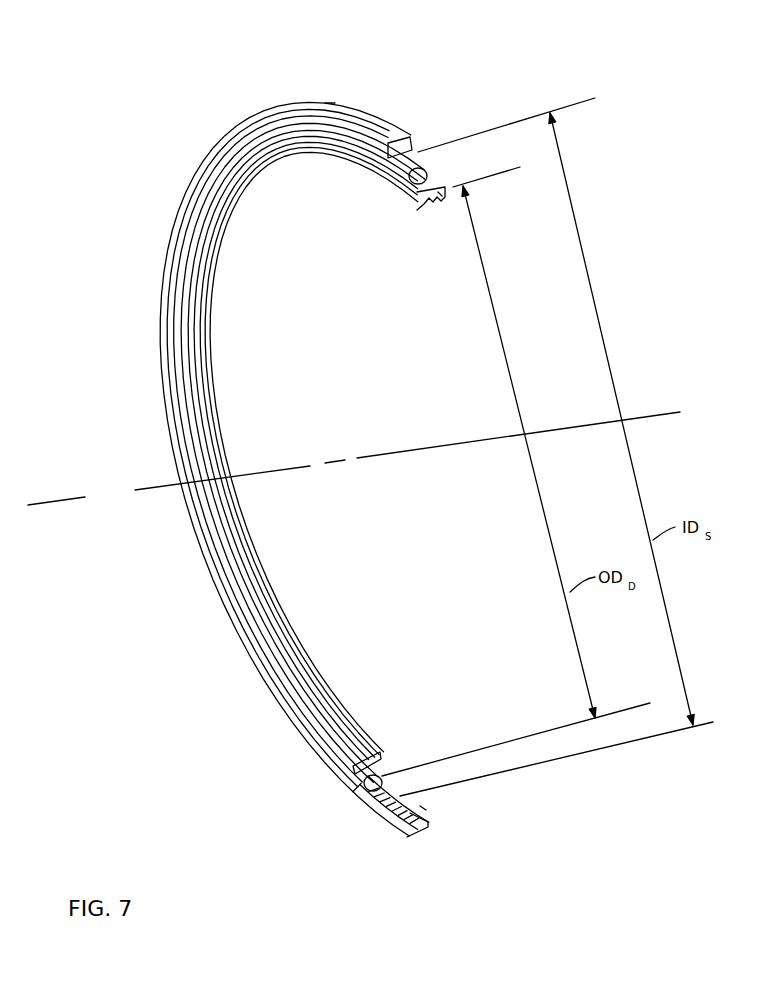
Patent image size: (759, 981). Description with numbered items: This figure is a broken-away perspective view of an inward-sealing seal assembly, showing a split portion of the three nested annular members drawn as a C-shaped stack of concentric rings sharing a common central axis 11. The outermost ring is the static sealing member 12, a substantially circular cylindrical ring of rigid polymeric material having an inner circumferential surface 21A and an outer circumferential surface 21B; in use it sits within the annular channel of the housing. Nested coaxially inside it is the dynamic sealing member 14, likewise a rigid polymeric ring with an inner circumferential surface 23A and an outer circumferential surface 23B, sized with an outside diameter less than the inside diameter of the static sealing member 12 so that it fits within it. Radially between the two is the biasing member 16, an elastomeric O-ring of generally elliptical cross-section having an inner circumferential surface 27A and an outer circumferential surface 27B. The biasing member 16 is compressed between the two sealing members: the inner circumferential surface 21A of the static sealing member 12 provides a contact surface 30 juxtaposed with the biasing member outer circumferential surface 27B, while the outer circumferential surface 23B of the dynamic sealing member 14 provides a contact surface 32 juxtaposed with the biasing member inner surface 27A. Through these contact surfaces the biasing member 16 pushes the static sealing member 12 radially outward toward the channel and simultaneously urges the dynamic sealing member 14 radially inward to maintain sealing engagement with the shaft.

The central axis 11 is at (75, 497).
The static sealing member 12 is at (370, 118).
The dynamic sealing member 14 is at (405, 203).
The biasing member 16 is at (407, 170).
The inner circumferential surface 21A is at (423, 807).
The outer circumferential surface 21B is at (330, 102).
The inner circumferential surface 23A is at (352, 722).
The outer circumferential surface 23B is at (347, 793).
The inner circumferential surface 27A is at (375, 758).
The outer circumferential surface 27B is at (377, 802).
The contact surface 30 is at (395, 830).
The contact surface 32 is at (432, 181).